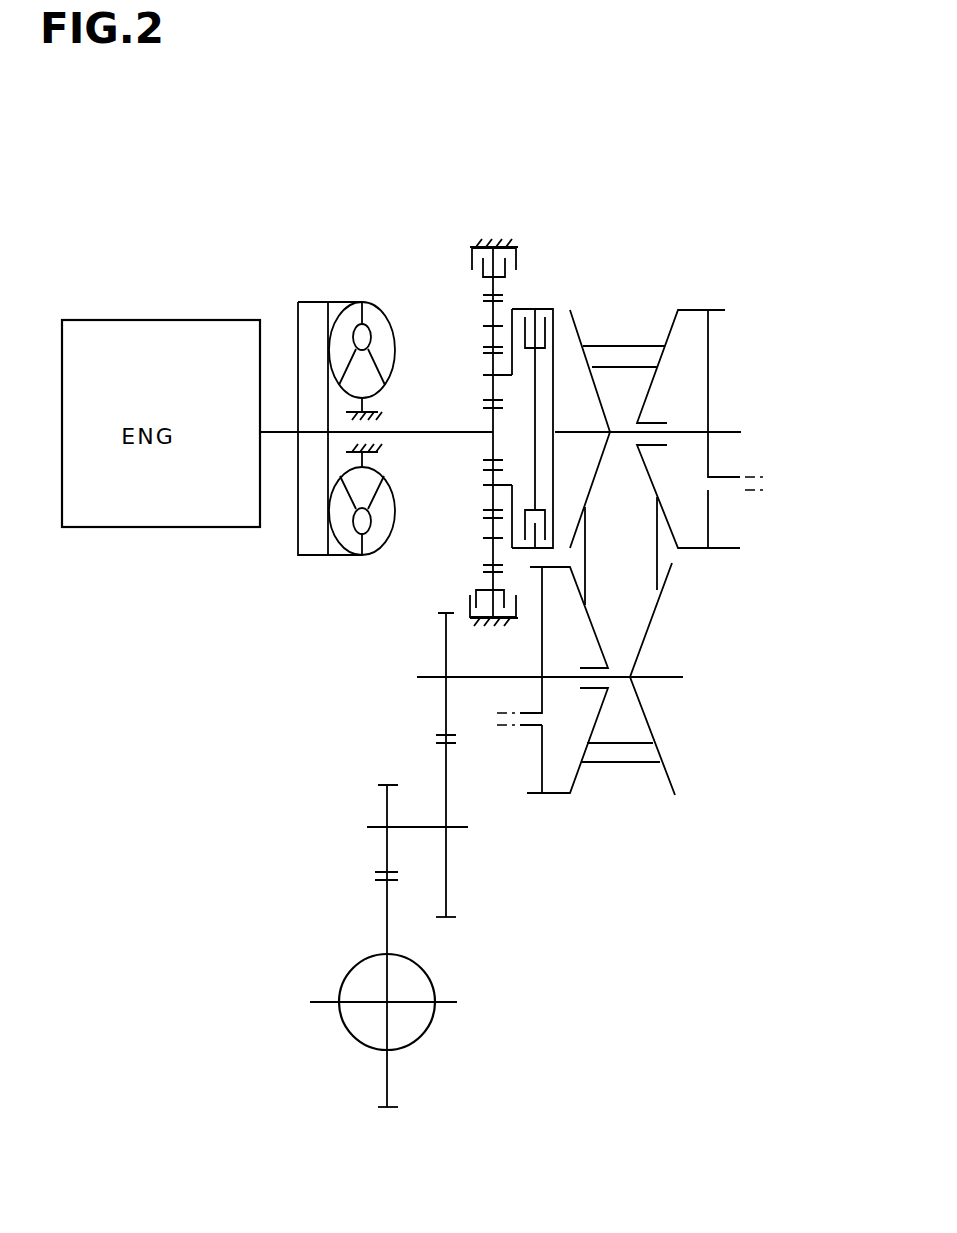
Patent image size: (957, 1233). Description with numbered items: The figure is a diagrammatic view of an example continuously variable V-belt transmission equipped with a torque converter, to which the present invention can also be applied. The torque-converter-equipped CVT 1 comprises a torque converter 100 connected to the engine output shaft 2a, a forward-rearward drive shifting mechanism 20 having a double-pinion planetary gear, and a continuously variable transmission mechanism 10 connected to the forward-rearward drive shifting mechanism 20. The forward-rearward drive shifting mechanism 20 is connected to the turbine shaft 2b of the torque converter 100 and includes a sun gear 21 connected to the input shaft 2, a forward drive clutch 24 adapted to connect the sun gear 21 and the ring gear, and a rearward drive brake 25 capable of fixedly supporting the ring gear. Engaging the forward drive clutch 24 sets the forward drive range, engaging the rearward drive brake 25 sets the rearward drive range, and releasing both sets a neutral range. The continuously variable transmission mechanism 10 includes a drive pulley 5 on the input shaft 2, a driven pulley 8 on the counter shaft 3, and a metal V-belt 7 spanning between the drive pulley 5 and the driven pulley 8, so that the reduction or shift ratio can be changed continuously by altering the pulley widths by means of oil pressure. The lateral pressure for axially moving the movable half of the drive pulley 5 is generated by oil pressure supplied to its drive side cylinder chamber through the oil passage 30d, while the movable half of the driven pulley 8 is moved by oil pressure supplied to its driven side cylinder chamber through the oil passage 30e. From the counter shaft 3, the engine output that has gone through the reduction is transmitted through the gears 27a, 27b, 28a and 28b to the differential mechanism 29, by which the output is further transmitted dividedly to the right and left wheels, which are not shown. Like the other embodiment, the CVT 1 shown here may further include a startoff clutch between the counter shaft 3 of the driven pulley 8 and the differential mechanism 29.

The CVT 1 is at (628, 258).
The input shaft 2 is at (741, 432).
The engine output shaft 2a is at (268, 432).
The turbine shaft 2b is at (423, 434).
The counter shaft 3 is at (662, 676).
The drive pulley 5 is at (668, 312).
The metal V-belt 7 is at (648, 555).
The driven pulley 8 is at (572, 792).
The continuously variable transmission mechanism 10 is at (704, 305).
The forward-rearward drive shifting mechanism 20 is at (450, 326).
The sun gear 21 is at (492, 420).
The forward drive clutch 24 is at (531, 309).
The rearward drive brake 25 is at (518, 262).
The gear 27a is at (442, 613).
The gear 27b is at (450, 919).
The gear 28a is at (380, 786).
The gear 28b is at (392, 1110).
The differential mechanism 29 is at (430, 1020).
The oil passage 30d is at (716, 492).
The oil passage 30e is at (532, 727).
The torque converter 100 is at (354, 288).